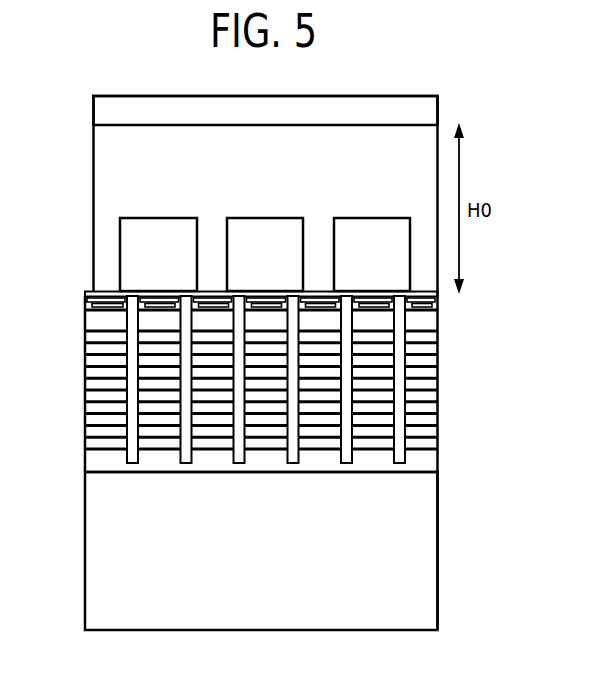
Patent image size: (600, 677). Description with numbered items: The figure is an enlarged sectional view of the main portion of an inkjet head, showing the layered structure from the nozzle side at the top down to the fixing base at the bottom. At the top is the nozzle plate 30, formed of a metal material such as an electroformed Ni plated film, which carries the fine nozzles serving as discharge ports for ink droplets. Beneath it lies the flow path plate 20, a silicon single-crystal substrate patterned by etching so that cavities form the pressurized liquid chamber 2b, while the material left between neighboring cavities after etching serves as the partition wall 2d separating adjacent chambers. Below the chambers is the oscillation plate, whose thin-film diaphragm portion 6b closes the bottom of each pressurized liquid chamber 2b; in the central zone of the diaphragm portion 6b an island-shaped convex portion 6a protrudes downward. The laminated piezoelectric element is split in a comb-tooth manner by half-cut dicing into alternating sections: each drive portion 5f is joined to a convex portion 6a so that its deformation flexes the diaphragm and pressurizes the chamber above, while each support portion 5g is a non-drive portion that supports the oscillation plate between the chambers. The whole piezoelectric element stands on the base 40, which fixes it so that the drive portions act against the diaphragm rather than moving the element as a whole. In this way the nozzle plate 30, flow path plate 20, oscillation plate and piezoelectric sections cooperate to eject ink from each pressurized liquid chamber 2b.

The flow path plate 20 is at (106, 151).
The nozzle plate 30 is at (183, 96).
The partition wall 2d is at (212, 243).
The pressurized liquid chamber 2b is at (379, 233).
The convex portion 6a is at (157, 293).
The diaphragm portion 6b is at (133, 298).
The drive portion 5f is at (376, 372).
The support portion 5g is at (333, 395).
The base 40 is at (95, 559).